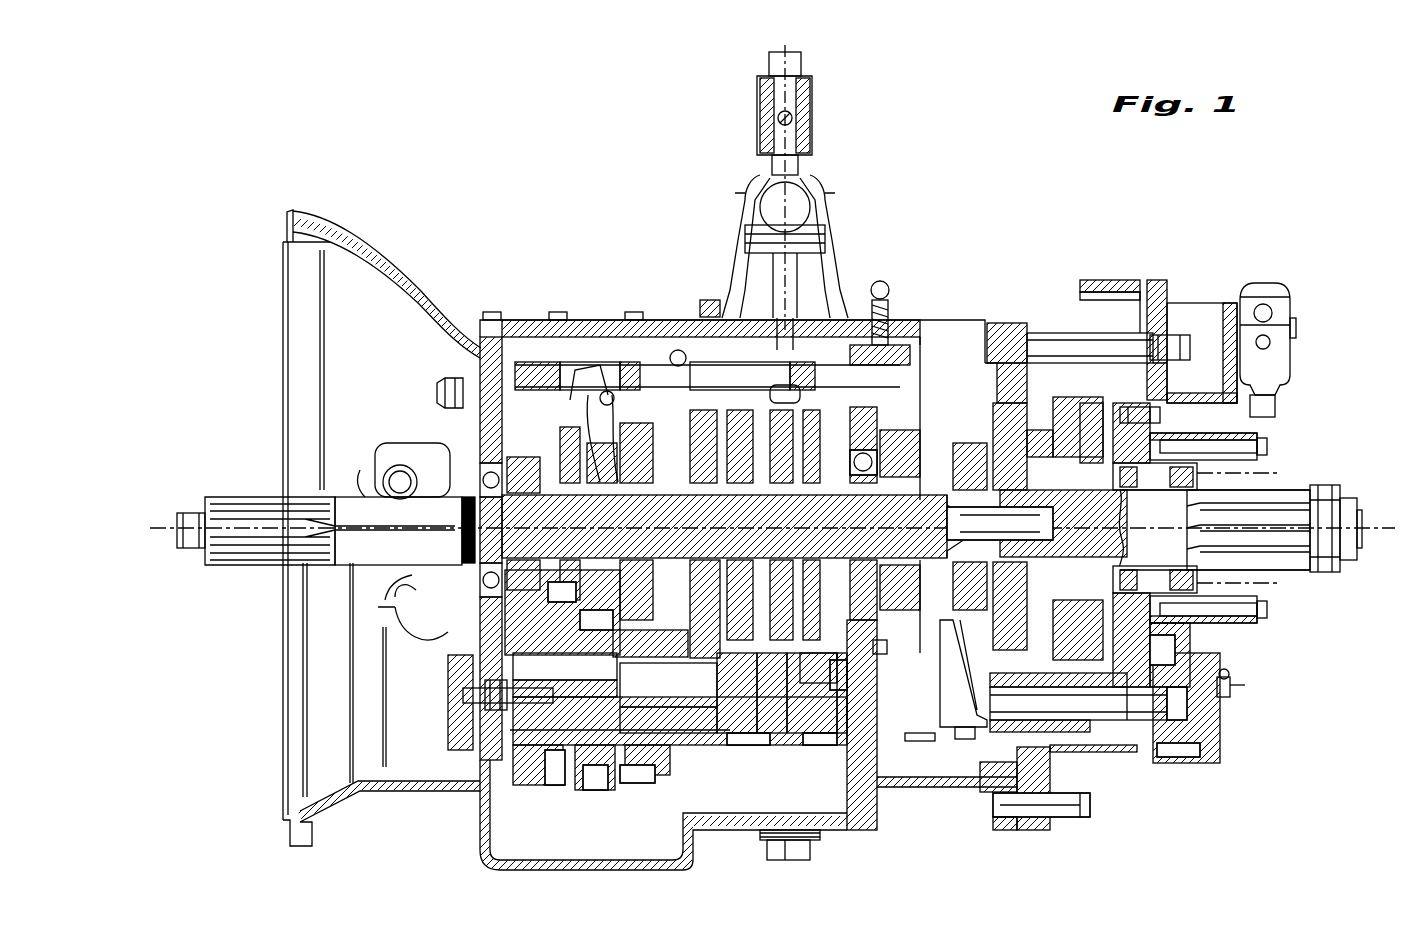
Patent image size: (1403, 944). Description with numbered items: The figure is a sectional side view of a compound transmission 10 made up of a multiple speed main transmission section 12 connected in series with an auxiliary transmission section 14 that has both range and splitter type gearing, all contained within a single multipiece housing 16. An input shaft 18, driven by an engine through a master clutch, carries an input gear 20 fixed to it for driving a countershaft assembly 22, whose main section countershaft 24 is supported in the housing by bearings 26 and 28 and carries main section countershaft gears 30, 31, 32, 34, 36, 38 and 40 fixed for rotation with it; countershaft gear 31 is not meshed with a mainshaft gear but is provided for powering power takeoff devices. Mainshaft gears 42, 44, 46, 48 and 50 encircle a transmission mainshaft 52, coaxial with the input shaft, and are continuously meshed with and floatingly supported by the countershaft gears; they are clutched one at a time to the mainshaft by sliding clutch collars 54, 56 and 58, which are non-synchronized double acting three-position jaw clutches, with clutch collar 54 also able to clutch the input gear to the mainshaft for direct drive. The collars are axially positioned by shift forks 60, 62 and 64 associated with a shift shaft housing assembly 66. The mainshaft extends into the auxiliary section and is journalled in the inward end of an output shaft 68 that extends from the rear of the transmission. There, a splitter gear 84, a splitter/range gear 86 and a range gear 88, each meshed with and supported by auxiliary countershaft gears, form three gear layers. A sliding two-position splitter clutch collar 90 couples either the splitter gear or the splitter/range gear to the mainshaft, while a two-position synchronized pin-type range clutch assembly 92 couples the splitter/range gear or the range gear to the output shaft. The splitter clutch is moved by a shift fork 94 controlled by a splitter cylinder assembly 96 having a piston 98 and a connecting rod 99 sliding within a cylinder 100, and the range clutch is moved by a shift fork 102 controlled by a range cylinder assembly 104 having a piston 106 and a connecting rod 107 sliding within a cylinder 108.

The compound transmission 10 is at (396, 142).
The main transmission section 12 is at (275, 861).
The auxiliary transmission section 14 is at (865, 861).
The housing 16 is at (477, 790).
The input shaft 18 is at (240, 495).
The input gear 20 is at (479, 470).
The countershaft assembly 22 is at (675, 768).
The main section countershaft 24 is at (788, 750).
The bearing 26 is at (445, 625).
The bearing 28 is at (880, 655).
The main section countershaft gear 30 is at (505, 822).
The main section countershaft gear 31 is at (557, 812).
The main section countershaft gear 32 is at (600, 790).
The main section countershaft gear 34 is at (655, 780).
The main section countershaft gear 36 is at (705, 755).
The main section countershaft gear 38 is at (748, 755).
The main section countershaft gear 40 is at (835, 750).
The mainshaft gear 42 is at (548, 345).
The mainshaft gear 44 is at (575, 360).
The mainshaft gear 46 is at (660, 420).
The mainshaft gear 48 is at (705, 415).
The mainshaft gear 50 is at (875, 400).
The transmission mainshaft 52 is at (705, 652).
The sliding clutch collar 54 is at (437, 392).
The sliding clutch collar 56 is at (598, 400).
The sliding clutch collar 58 is at (820, 325).
The shift fork 60 is at (505, 395).
The shift fork 62 is at (628, 405).
The shift fork 64 is at (745, 418).
The shift shaft housing assembly 66 is at (515, 310).
The output shaft 68 is at (1275, 490).
The auxiliary section splitter gear 84 is at (905, 430).
The auxiliary section splitter/range gear 86 is at (990, 687).
The auxiliary section range gear 88 is at (1073, 655).
The splitter clutch collar 90 is at (935, 470).
The range clutch assembly 92 is at (1047, 607).
The shift fork 94 is at (950, 665).
The splitter cylinder assembly 96 is at (1148, 767).
The piston 98 is at (1190, 678).
The connecting rod 99 is at (1090, 705).
The cylinder 100 is at (1007, 735).
The shift fork 102 is at (1020, 330).
The range cylinder assembly 104 is at (1100, 335).
The piston 106 is at (1195, 320).
The connecting rod 107 is at (1056, 318).
The cylinder 108 is at (1140, 330).